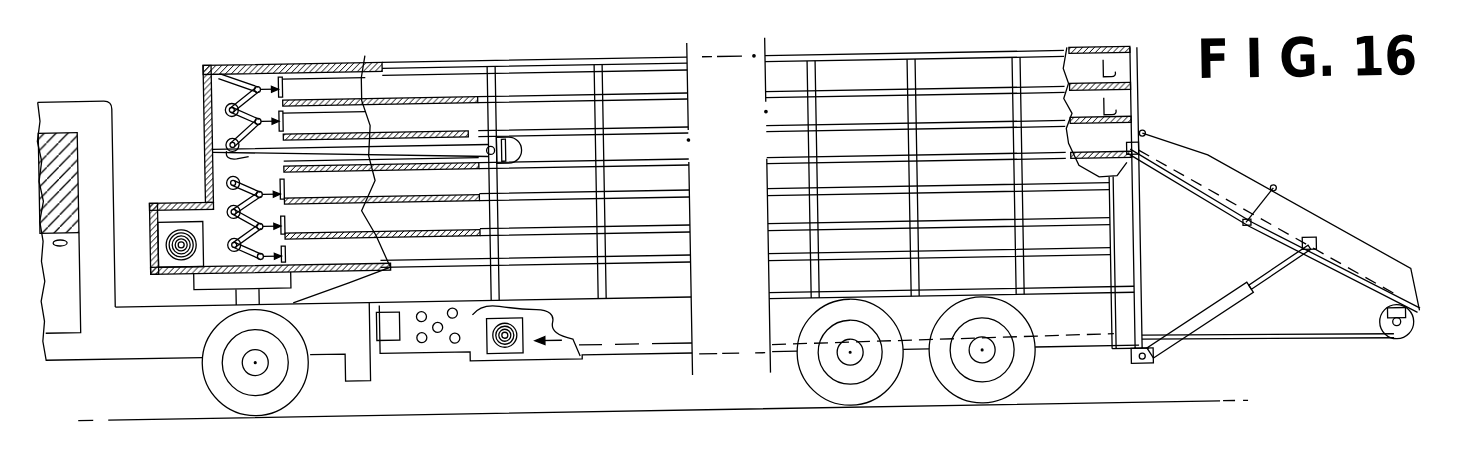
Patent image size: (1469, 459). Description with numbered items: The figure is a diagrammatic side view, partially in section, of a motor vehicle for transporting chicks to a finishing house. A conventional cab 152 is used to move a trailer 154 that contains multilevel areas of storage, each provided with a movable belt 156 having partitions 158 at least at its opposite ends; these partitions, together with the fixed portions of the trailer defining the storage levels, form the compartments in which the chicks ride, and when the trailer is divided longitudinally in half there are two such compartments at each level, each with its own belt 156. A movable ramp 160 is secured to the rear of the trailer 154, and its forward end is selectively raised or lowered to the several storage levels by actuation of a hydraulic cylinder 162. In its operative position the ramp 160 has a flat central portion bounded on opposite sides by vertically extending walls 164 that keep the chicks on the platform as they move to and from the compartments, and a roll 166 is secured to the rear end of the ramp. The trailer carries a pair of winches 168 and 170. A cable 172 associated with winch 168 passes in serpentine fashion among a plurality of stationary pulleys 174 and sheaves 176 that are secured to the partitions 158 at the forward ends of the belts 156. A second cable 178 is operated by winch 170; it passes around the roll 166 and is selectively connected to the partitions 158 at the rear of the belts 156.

The cab 152 is at (106, 89).
The trailer 154 is at (662, 374).
The movable belt 156 is at (373, 80).
The partition 158 is at (283, 115).
The movable ramp 160 is at (1300, 199).
The hydraulic cylinder 162 is at (1235, 300).
The vertically extending wall 164 is at (1220, 180).
The roll 166 is at (1393, 352).
The winch 168 is at (183, 242).
The winch 170 is at (507, 347).
The cable 172 is at (247, 148).
The stationary pulley 174 is at (230, 96).
The sheave 176 is at (475, 160).
The second cable 178 is at (1305, 350).